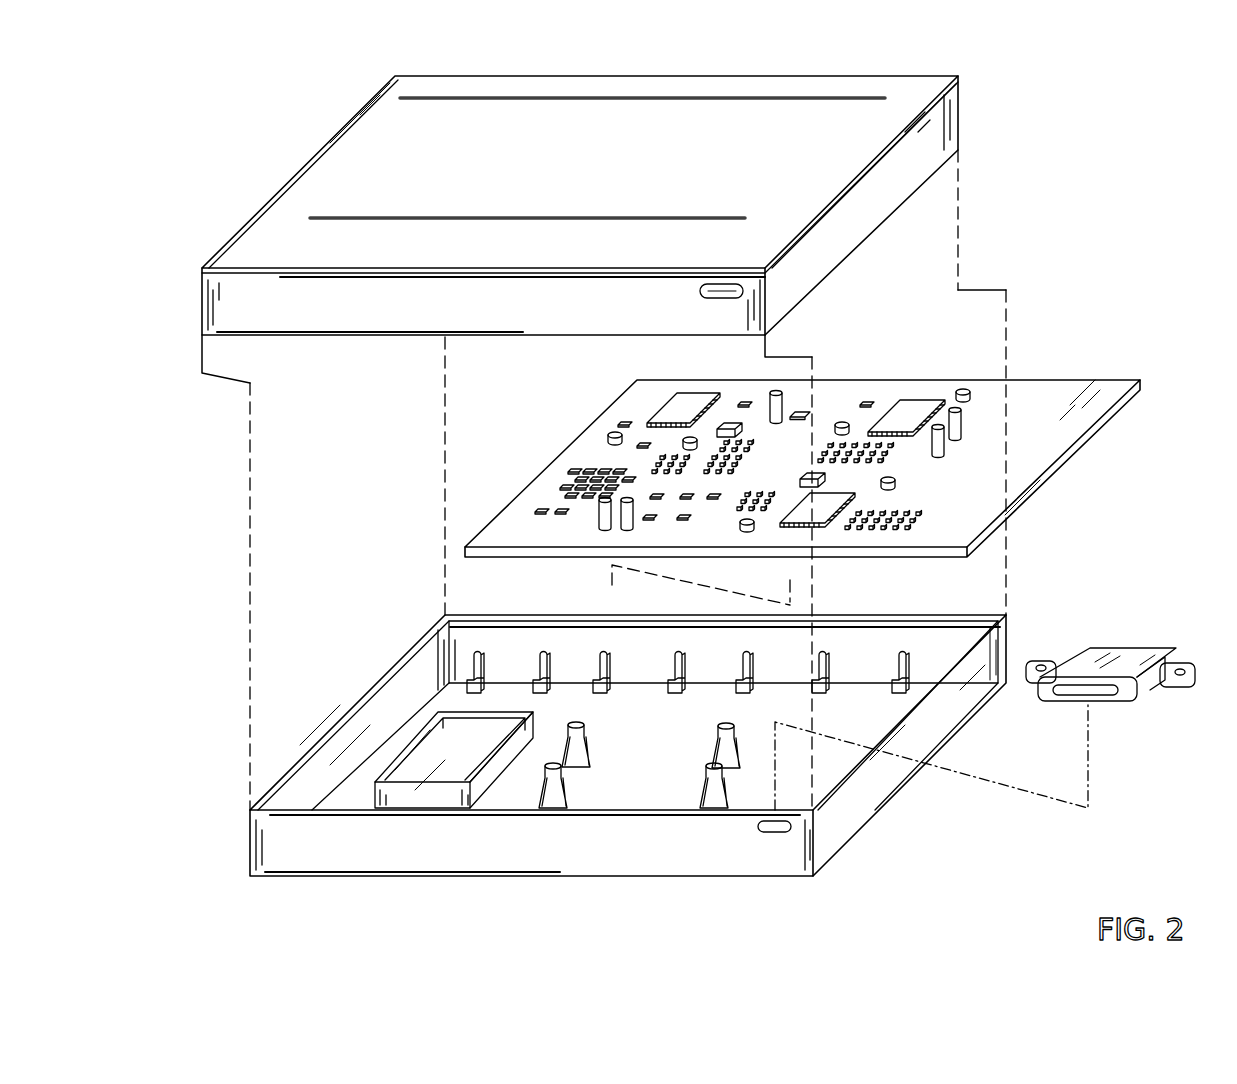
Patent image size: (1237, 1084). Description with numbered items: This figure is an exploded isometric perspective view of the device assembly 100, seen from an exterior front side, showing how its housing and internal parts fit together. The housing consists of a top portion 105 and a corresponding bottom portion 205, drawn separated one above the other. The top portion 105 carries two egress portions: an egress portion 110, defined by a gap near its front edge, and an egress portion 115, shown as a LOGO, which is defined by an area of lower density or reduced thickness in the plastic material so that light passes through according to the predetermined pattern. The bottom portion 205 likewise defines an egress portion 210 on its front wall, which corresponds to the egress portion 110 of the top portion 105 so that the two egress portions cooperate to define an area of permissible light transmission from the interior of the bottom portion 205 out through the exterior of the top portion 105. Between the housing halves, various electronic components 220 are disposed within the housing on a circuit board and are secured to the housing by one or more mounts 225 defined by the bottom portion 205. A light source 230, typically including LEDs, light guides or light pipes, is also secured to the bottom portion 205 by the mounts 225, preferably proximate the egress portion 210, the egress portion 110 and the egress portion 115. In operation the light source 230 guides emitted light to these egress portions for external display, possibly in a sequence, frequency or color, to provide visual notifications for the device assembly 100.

The device assembly 100 is at (1178, 80).
The top portion 105 is at (868, 132).
The egress portion 110 is at (740, 291).
The egress portion 115 is at (765, 240).
The bottom portion 205 is at (847, 797).
The egress portion 210 is at (790, 828).
The electronic components 220 is at (1022, 450).
The mounts 225 is at (503, 740).
The light source 230 is at (1107, 690).